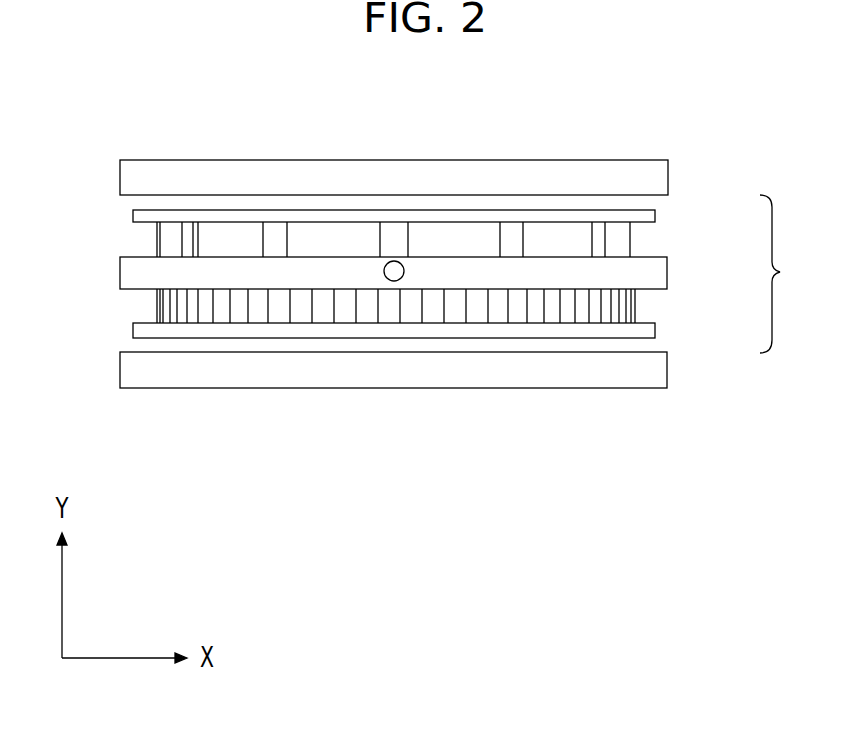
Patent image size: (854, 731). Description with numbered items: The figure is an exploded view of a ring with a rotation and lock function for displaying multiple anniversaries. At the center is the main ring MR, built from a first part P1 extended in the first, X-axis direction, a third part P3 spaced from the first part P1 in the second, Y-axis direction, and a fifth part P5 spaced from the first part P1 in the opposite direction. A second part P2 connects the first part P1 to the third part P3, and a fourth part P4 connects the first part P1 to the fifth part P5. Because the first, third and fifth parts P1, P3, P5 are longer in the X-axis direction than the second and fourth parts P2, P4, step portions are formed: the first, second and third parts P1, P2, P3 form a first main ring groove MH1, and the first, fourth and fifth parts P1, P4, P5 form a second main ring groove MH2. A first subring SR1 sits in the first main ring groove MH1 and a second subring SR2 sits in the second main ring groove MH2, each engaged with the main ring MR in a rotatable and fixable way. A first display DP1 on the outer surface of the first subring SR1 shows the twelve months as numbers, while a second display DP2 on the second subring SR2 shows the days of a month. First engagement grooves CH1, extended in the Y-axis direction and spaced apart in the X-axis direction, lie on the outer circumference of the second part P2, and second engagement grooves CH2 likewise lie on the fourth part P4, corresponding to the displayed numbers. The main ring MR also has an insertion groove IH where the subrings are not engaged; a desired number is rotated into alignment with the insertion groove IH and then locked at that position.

The first subring SR1 is at (657, 178).
The second subring SR2 is at (666, 373).
The first display DP1 is at (535, 152).
The second display DP2 is at (598, 391).
The first engagement grooves CH1 is at (190, 240).
The second engagement grooves CH2 is at (224, 310).
The insertion groove IH is at (401, 258).
The first main ring groove MH1 is at (138, 241).
The second main ring groove MH2 is at (138, 307).
The first part P1 is at (652, 272).
The second part P2 is at (617, 233).
The third part P3 is at (653, 218).
The fourth part P4 is at (617, 310).
The fifth part P5 is at (637, 330).
The main ring MR is at (788, 274).